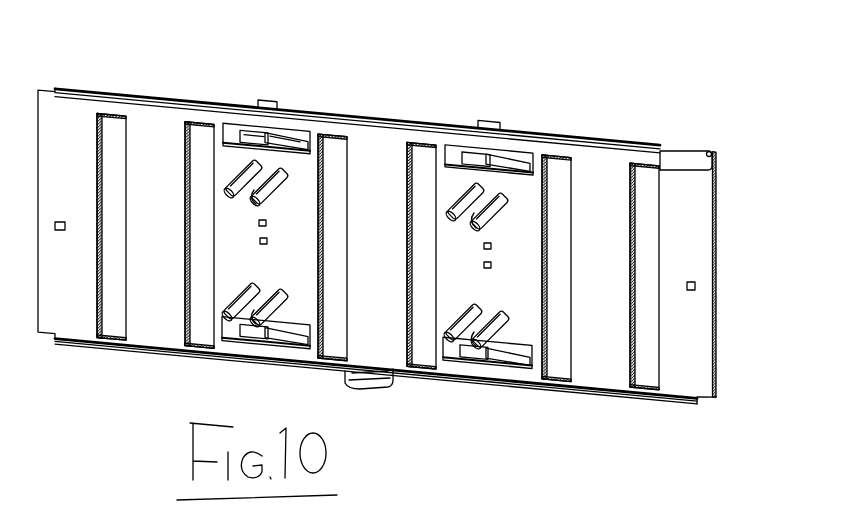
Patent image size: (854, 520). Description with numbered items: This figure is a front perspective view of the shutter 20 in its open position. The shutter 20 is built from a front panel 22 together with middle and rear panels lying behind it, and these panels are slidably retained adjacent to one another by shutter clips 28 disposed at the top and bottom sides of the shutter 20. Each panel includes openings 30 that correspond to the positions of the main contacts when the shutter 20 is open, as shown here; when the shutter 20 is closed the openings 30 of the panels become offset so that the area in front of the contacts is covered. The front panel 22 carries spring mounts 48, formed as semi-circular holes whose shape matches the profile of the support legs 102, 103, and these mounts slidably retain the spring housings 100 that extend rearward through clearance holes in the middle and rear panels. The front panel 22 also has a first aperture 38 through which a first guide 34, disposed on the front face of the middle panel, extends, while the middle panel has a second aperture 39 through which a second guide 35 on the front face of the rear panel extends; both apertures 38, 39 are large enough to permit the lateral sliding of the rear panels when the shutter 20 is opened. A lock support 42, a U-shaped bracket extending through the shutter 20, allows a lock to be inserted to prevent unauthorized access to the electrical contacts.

The shutter 20 is at (744, 98).
The front panel 22 is at (613, 262).
The shutter clip 28 is at (568, 142).
The opening 30 is at (647, 367).
The first guide 34 is at (253, 122).
The second guide 35 is at (283, 143).
The first aperture 38 is at (308, 138).
The second aperture 39 is at (236, 147).
The lock support 42 is at (390, 388).
The spring mount 48 is at (482, 196).
The spring housing 100 is at (497, 204).
The support leg 102 is at (500, 328).
The support leg 103 is at (462, 364).